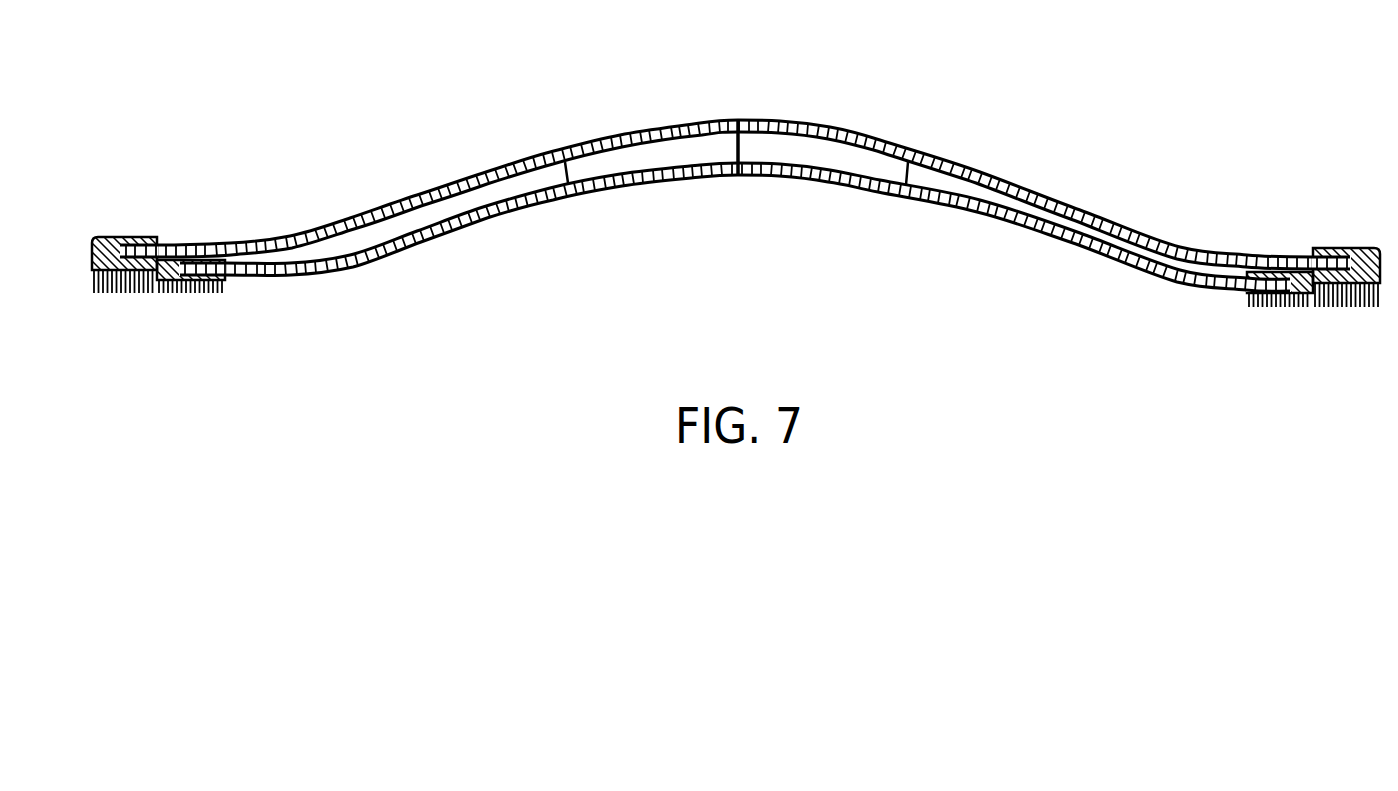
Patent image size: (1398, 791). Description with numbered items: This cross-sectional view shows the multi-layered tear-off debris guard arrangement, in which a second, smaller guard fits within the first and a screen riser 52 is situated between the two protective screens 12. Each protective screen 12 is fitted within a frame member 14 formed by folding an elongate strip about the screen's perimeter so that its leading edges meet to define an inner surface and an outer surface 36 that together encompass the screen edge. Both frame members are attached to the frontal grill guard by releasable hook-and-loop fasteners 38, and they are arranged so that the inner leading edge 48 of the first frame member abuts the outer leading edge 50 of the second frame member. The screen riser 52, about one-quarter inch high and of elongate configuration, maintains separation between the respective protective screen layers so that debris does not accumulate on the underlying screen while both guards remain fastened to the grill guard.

The protective screen 12 is at (527, 206).
The frame member 14 is at (1357, 248).
The outer surface 36 is at (118, 237).
The hook-and-loop fasteners 38 is at (197, 296).
The inner leading edge 48 is at (162, 243).
The outer leading edge 50 is at (1292, 308).
The screen riser 52 is at (670, 137).